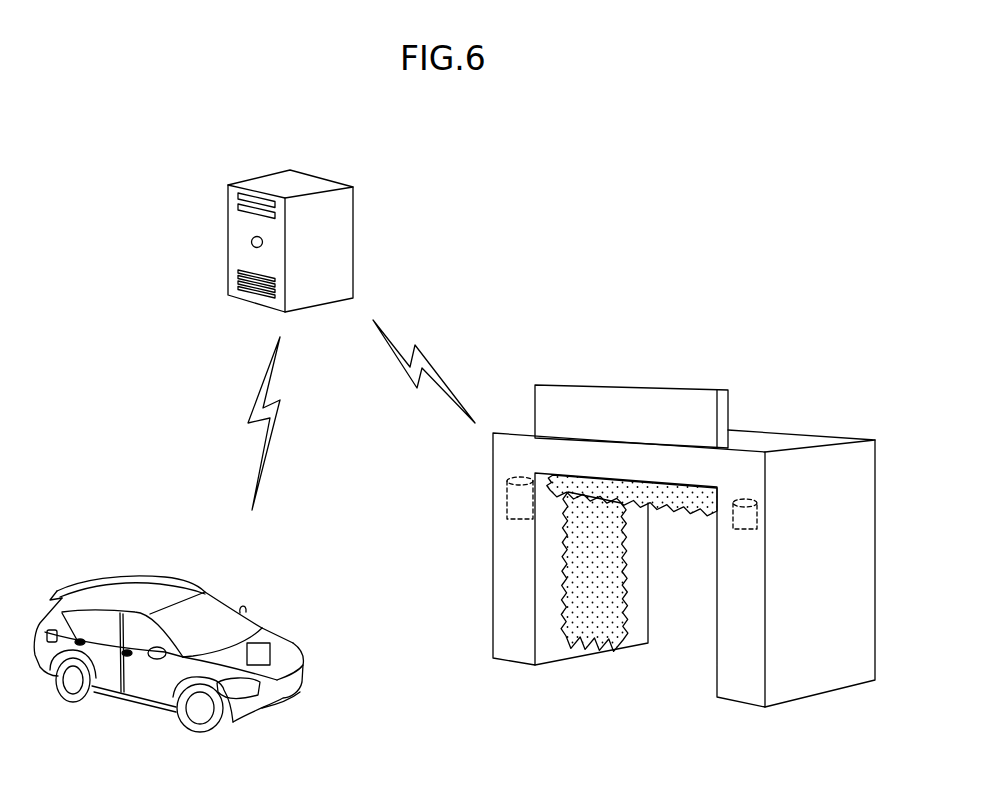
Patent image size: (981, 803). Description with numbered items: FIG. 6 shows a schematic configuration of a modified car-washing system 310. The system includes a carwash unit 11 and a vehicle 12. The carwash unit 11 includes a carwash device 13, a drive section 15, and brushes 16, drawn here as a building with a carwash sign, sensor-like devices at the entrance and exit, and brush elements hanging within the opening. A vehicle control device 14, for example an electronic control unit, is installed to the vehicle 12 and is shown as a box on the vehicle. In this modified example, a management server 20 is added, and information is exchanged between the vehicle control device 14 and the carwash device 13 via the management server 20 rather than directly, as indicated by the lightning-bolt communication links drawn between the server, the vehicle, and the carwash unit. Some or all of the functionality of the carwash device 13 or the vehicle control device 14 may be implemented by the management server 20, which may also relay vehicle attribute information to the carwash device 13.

The car-washing system 310 is at (123, 203).
The management server 20 is at (313, 178).
The vehicle 12 is at (192, 585).
The vehicle control device 14 is at (264, 643).
The carwash unit 11 is at (767, 440).
The carwash device 13 is at (507, 487).
The drive section 15 is at (732, 521).
The brushes 16 is at (557, 636).